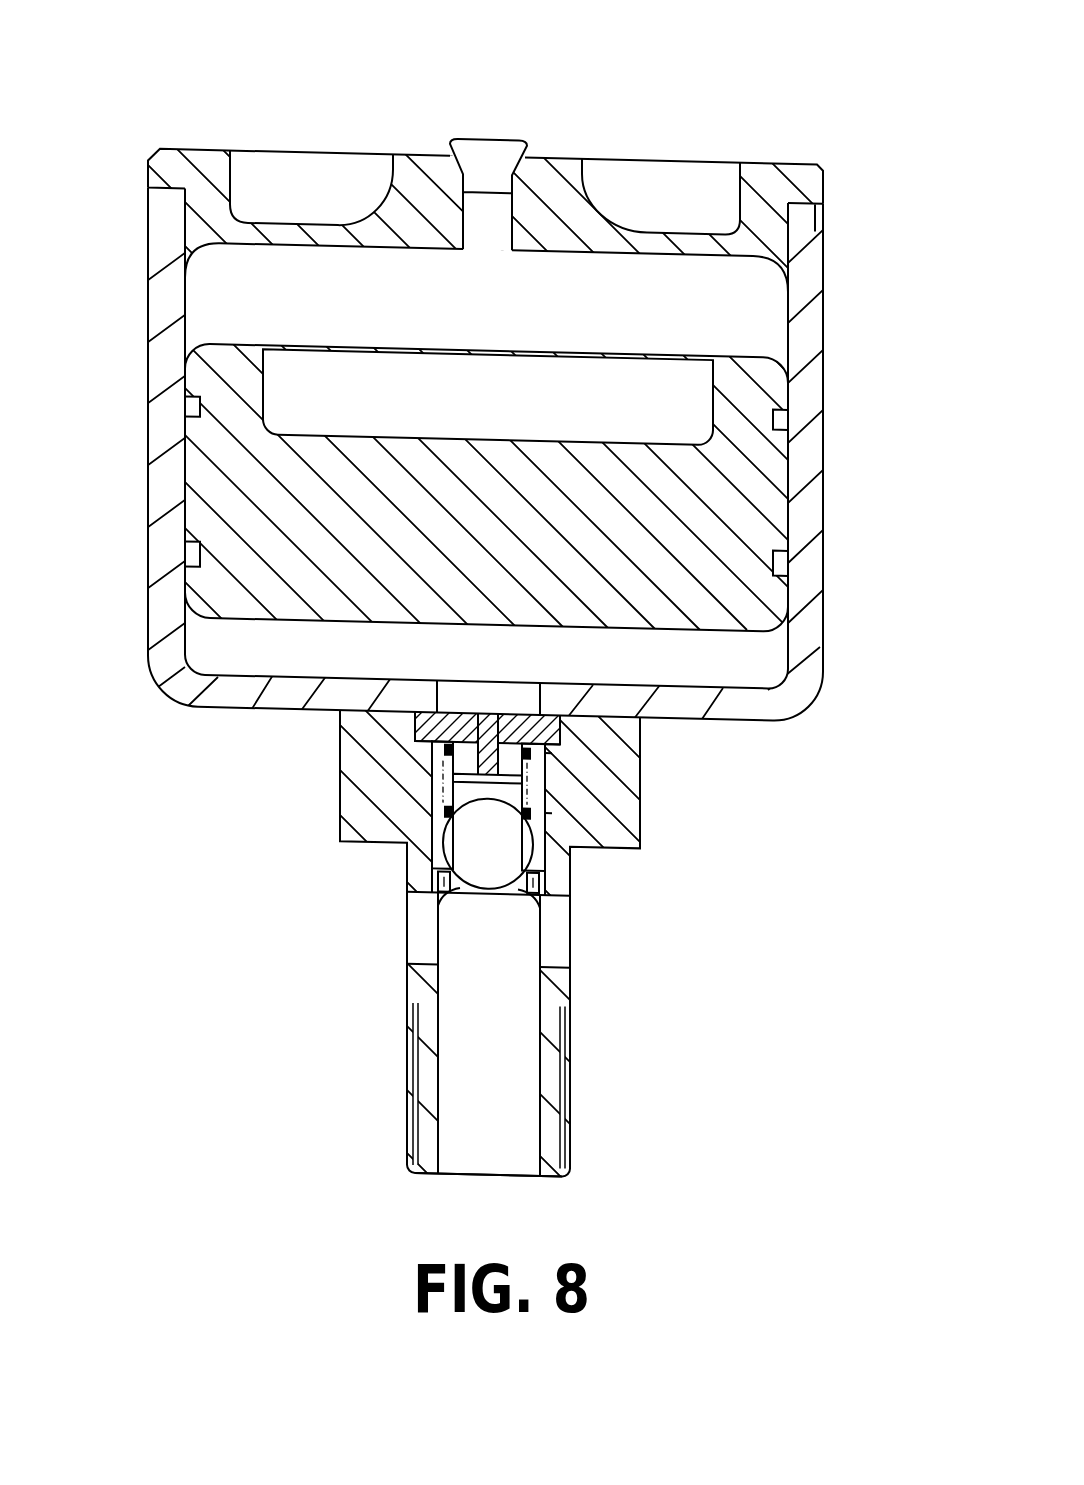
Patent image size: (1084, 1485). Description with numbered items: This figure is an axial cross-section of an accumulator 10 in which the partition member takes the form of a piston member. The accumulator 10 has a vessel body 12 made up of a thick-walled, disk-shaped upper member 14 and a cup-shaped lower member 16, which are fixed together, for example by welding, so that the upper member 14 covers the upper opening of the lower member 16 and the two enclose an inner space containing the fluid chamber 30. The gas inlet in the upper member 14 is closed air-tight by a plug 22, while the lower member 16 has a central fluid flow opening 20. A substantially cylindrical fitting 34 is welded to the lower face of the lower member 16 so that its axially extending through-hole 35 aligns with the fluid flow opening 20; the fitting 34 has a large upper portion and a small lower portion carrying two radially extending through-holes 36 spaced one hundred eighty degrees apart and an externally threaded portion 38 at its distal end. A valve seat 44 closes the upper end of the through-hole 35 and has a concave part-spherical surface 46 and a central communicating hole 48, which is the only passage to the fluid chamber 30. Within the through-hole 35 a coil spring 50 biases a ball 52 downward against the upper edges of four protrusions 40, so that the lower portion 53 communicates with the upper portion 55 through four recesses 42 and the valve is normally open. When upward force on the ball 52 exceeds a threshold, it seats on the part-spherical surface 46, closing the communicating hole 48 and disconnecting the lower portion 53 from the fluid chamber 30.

The accumulator 10 is at (800, 102).
The vessel body 12 is at (55, 70).
The upper member 14 is at (198, 134).
The lower member 16 is at (135, 206).
The fluid flow opening 20 is at (527, 693).
The plug 22 is at (502, 156).
The fluid chamber 30 is at (347, 648).
The fitting 34 is at (657, 832).
The axially extending through-hole 35 is at (572, 1058).
The radially extending through-holes 36 is at (420, 963).
The externally threaded portion 38 is at (567, 1108).
The protrusions 40 is at (456, 898).
The recesses 42 is at (445, 893).
The valve seat 44 is at (398, 723).
The part-spherical surface 46 is at (547, 786).
The communicating hole 48 is at (433, 758).
The coil spring 50 is at (535, 757).
The ball 52 is at (458, 840).
The lower portion 53 is at (480, 1160).
The upper portion 55 is at (540, 812).